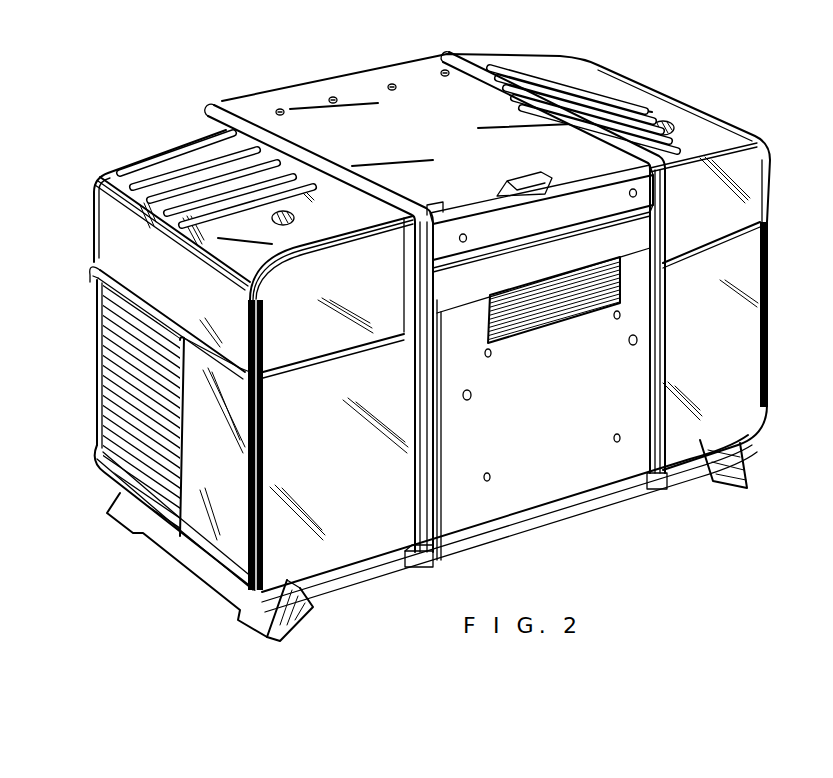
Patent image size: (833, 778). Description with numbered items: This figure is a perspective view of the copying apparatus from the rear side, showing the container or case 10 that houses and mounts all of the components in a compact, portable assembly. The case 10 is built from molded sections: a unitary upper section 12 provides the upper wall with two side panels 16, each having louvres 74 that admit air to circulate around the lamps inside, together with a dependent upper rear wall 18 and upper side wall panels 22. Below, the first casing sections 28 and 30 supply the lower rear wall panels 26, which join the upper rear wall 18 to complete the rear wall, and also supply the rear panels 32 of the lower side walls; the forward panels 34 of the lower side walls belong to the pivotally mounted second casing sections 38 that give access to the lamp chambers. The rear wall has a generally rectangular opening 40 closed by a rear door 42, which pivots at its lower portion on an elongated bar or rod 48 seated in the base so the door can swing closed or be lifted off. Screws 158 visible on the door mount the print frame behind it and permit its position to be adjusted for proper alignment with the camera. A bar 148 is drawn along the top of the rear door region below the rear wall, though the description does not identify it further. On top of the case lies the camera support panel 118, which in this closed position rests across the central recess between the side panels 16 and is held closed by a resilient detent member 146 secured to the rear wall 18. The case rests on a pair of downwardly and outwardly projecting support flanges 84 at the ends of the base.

The container or case 10 is at (113, 150).
The unitary upper section 12 is at (688, 98).
The side panels 16 is at (260, 237).
The upper rear wall 18 is at (360, 287).
The upper side wall panels 22 is at (227, 304).
The lower rear wall panels 26 is at (340, 460).
The first casing section 28 is at (250, 548).
The first casing section 30 is at (773, 370).
The rear panels 32 is at (212, 467).
The forward panels 34 is at (117, 407).
The second casing sections 38 is at (92, 367).
The rectangular opening 40 is at (437, 380).
The rear door 42 is at (559, 411).
The elongated bar or rod 48 is at (468, 543).
The louvres 74 is at (193, 166).
The support flanges 84 is at (735, 463).
The camera support panel 118 is at (430, 154).
The resilient detent member 146 is at (520, 176).
The top bar 148 is at (510, 237).
The screws 158 is at (614, 318).